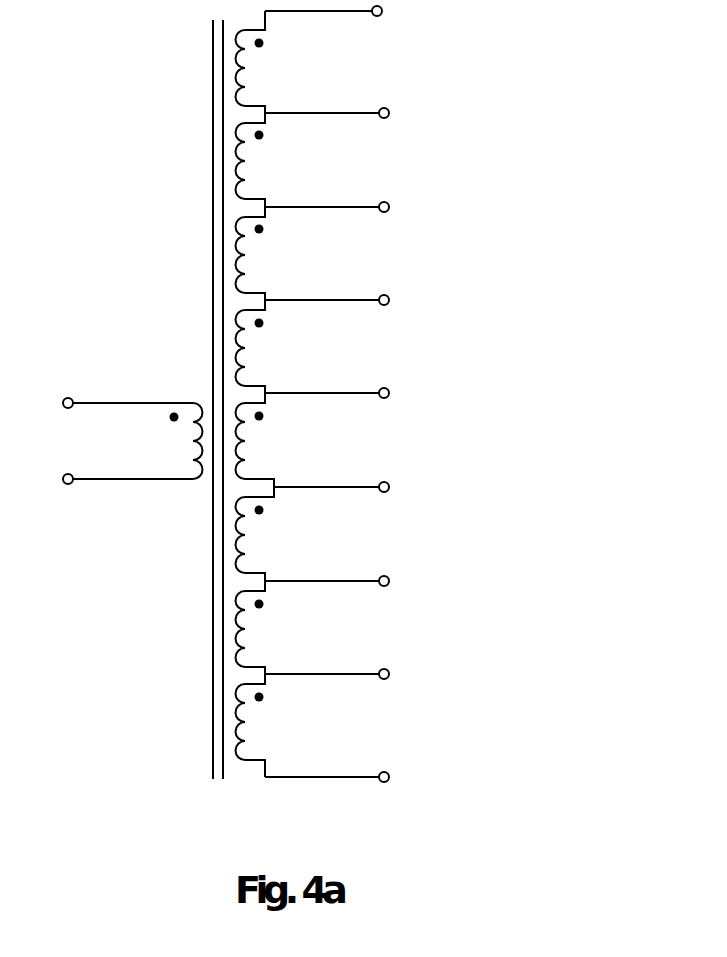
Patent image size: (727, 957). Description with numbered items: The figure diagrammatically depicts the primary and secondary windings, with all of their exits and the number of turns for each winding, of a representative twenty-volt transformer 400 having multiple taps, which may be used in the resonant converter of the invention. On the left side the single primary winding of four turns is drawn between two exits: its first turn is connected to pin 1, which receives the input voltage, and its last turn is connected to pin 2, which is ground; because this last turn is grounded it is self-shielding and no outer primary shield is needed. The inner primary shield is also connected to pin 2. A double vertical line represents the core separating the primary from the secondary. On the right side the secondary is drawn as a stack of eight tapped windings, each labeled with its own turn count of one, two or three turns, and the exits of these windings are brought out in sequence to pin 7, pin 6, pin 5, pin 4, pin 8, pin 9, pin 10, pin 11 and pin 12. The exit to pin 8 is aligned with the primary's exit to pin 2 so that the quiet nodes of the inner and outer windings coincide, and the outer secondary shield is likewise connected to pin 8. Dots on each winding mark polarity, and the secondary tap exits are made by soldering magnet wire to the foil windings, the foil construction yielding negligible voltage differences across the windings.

The transformer 400 is at (522, 330).
The pin 1 is at (117, 402).
The pin 2 is at (117, 483).
The pin 4 is at (341, 301).
The pin 5 is at (341, 208).
The pin 6 is at (341, 114).
The pin 7 is at (341, 13).
The pin 8 is at (341, 394).
The pin 9 is at (345, 488).
The pin 10 is at (346, 581).
The pin 11 is at (346, 673).
The pin 12 is at (346, 777).